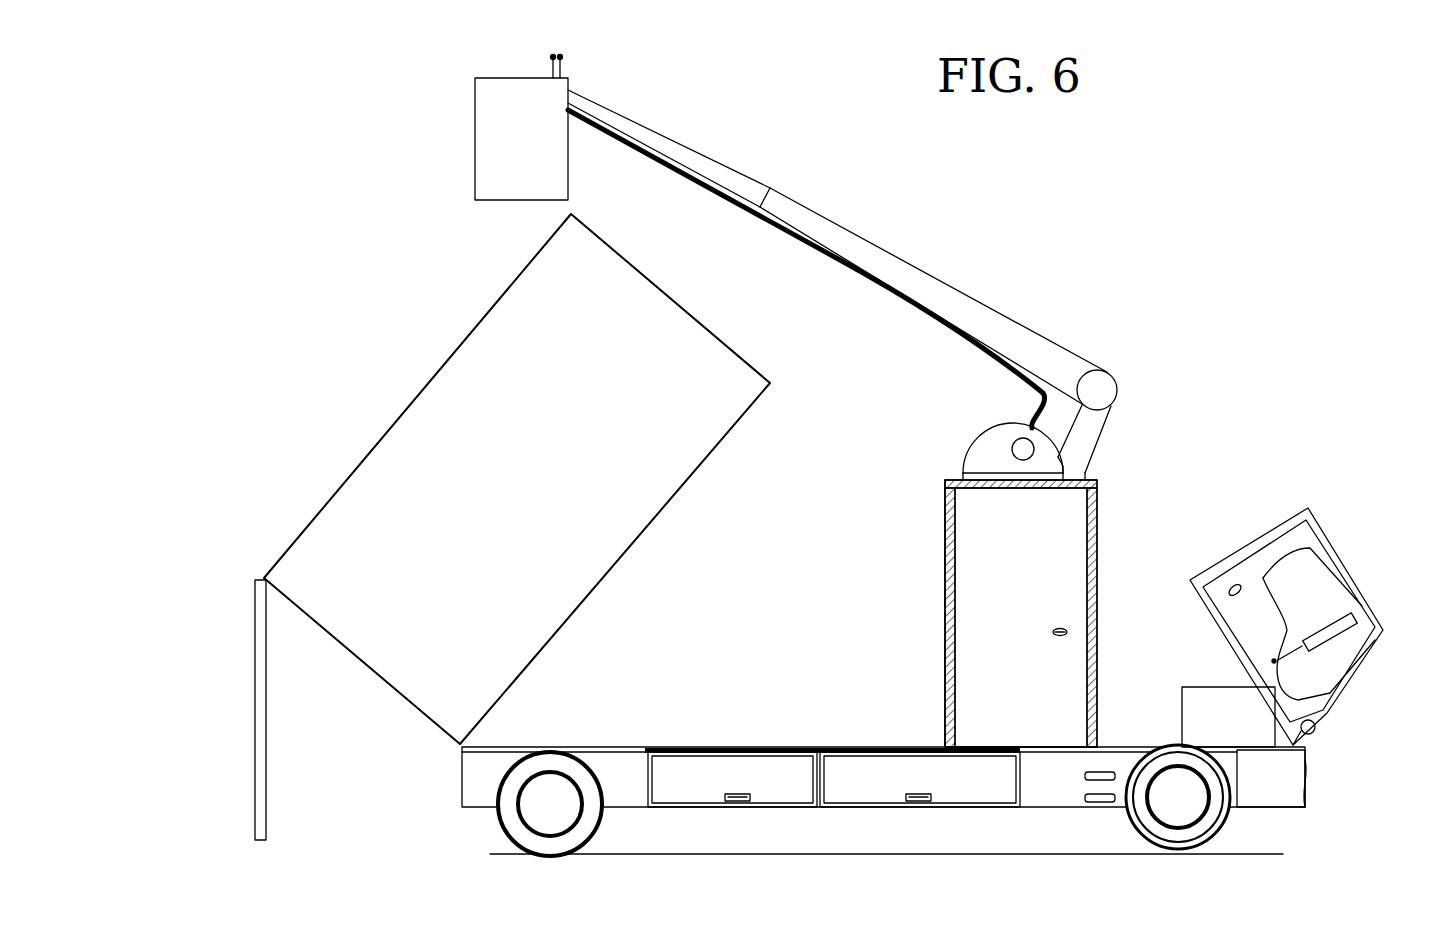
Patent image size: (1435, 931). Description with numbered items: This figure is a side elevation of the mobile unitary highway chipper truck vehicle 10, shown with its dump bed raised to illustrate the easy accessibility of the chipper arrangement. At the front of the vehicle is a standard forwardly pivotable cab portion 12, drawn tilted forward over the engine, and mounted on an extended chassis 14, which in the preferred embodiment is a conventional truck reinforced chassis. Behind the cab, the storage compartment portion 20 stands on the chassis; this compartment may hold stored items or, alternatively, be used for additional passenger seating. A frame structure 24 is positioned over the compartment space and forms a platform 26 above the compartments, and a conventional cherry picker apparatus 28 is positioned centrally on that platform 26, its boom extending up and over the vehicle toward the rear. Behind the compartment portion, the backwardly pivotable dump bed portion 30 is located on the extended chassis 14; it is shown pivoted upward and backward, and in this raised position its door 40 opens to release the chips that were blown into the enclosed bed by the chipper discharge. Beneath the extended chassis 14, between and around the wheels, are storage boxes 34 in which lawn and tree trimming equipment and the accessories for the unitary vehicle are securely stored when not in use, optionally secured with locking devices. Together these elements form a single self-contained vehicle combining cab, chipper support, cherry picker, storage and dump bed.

The mobile unitary highway chipper truck vehicle 10 is at (1195, 173).
The cab portion 12 is at (1340, 548).
The extended chassis 14 is at (853, 744).
The storage compartment portion 20 is at (1066, 535).
The frame structure 24 is at (945, 602).
The platform 26 is at (1113, 420).
The cherry picker apparatus 28 is at (937, 277).
The backwardly pivotable dump bed portion 30 is at (466, 338).
The storage box 34 is at (687, 778).
The door 40 is at (255, 735).